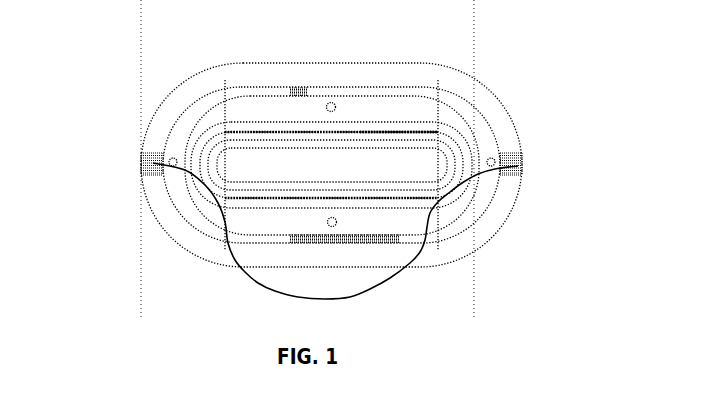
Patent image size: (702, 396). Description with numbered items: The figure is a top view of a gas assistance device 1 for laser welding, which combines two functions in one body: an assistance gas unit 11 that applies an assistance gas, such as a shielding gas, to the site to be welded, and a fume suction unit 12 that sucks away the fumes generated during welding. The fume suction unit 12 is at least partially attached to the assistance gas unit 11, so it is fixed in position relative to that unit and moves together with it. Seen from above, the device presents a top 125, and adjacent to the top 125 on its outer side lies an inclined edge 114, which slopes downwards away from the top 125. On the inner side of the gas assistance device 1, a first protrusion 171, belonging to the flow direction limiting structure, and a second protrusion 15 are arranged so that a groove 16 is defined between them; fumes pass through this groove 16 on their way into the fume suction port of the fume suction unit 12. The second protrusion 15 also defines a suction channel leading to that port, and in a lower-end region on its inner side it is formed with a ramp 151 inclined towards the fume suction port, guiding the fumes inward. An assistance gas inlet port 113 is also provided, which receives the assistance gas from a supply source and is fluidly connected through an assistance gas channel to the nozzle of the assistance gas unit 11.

The gas assistance device 1 is at (124, 69).
The assistance gas unit 11 is at (482, 100).
The fume suction unit 12 is at (270, 140).
The second protrusion 15 is at (365, 131).
The groove 16 is at (231, 140).
The assistance gas inlet port 113 is at (335, 236).
The inclined edge 114 is at (158, 224).
The top 125 is at (483, 140).
The ramp 151 is at (388, 131).
The first protrusion 171 is at (311, 146).